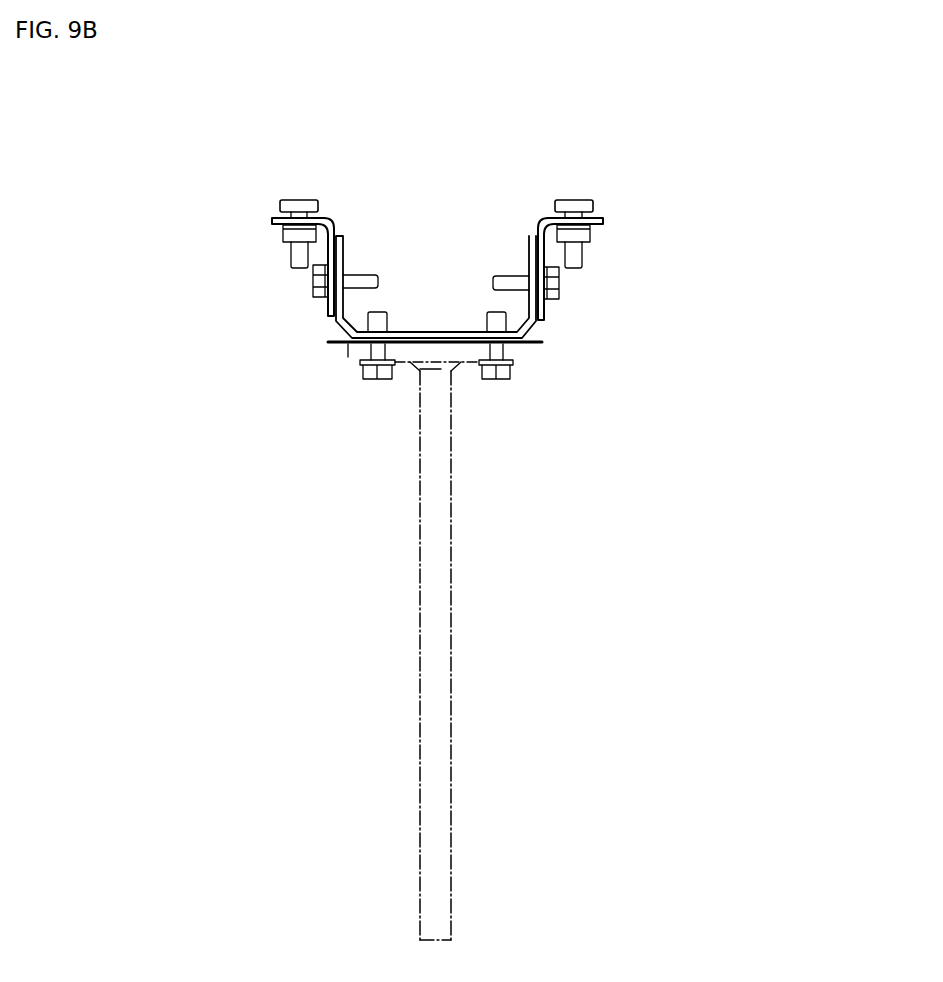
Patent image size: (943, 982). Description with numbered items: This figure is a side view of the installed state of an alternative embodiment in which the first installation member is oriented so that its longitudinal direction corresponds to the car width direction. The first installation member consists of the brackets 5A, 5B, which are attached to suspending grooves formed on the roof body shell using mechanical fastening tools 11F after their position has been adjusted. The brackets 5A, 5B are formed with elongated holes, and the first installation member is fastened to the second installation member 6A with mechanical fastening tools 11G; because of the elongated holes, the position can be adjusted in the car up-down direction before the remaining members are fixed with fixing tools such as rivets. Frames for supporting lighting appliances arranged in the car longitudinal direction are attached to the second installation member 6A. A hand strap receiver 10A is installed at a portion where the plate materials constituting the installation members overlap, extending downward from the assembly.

The first bracket 5A is at (272, 221).
The second bracket 5B is at (603, 221).
The mechanical fastening tool 11F is at (300, 200).
The mechanical fastening tool 11G is at (313, 280).
The second installation member 6A is at (328, 339).
The hand strap receiver 10A is at (450, 697).